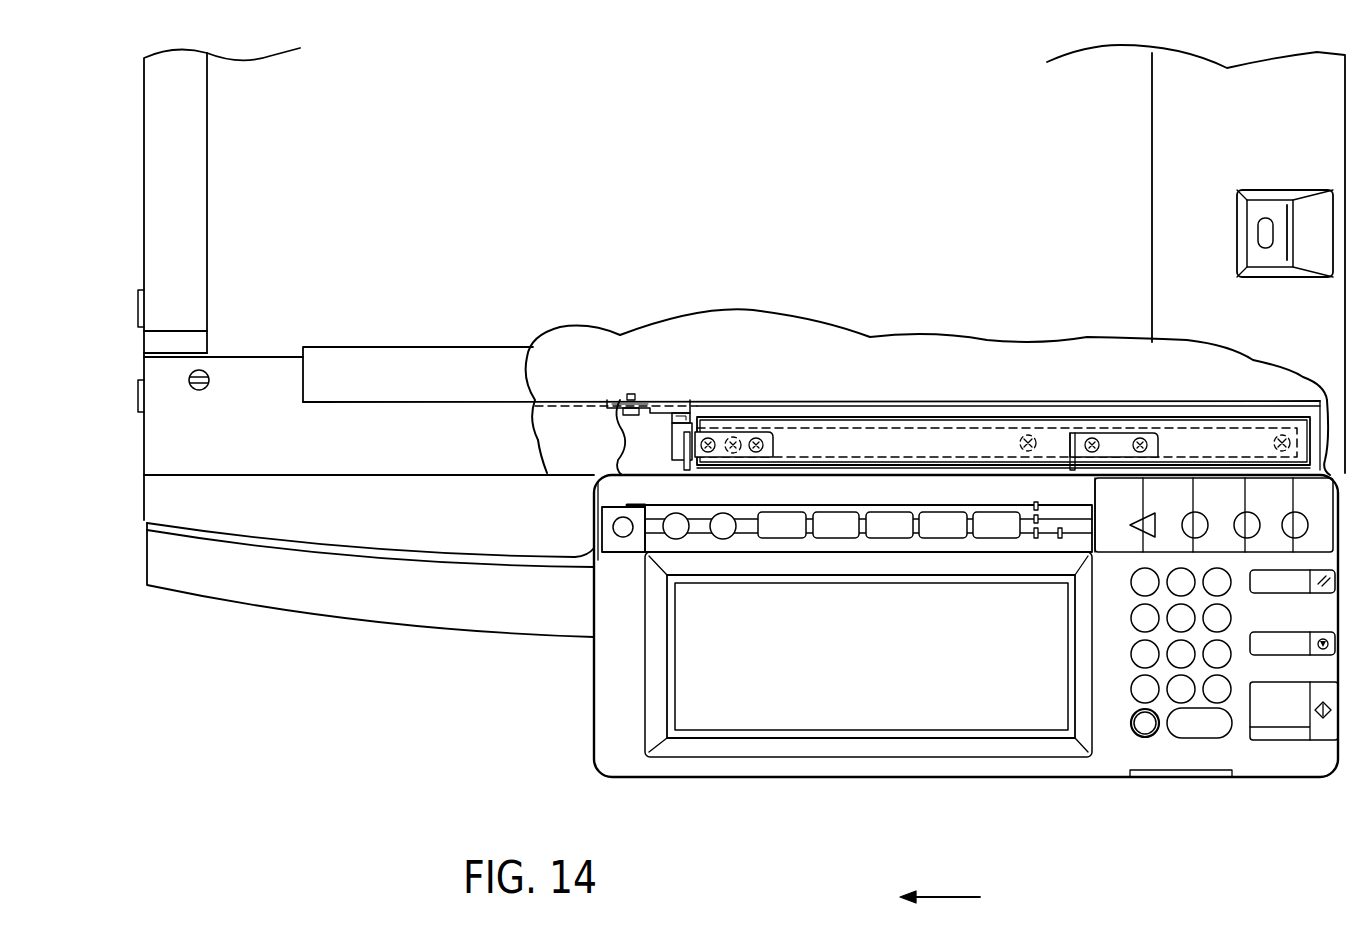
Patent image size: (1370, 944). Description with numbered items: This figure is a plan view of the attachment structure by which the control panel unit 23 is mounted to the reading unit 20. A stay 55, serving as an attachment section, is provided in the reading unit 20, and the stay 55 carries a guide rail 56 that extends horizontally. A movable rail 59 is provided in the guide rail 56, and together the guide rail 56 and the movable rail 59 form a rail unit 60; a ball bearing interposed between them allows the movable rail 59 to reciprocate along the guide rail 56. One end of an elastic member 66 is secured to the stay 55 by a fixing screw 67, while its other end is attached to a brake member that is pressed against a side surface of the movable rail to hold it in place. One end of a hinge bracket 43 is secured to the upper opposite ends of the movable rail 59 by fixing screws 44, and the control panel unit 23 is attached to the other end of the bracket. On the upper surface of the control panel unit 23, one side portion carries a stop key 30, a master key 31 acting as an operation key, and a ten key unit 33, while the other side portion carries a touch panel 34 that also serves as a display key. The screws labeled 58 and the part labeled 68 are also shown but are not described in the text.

The reading unit 20 is at (1162, 119).
The control panel unit 23 is at (1338, 812).
The stop key 30 is at (1290, 640).
The master key 31 is at (1283, 708).
The ten key unit 33 is at (1182, 622).
The touch panel 34 is at (820, 692).
The hinge bracket 43 is at (717, 440).
The fixing screws 44 is at (757, 428).
The stay 55 is at (581, 430).
The guide rail 56 is at (949, 412).
The screw 58 is at (1027, 430).
The movable rail 59 is at (886, 440).
The rail unit 60 is at (983, 426).
The elastic member 66 is at (672, 410).
The fixing screw 67 is at (630, 393).
The engagement portion 68 is at (683, 414).